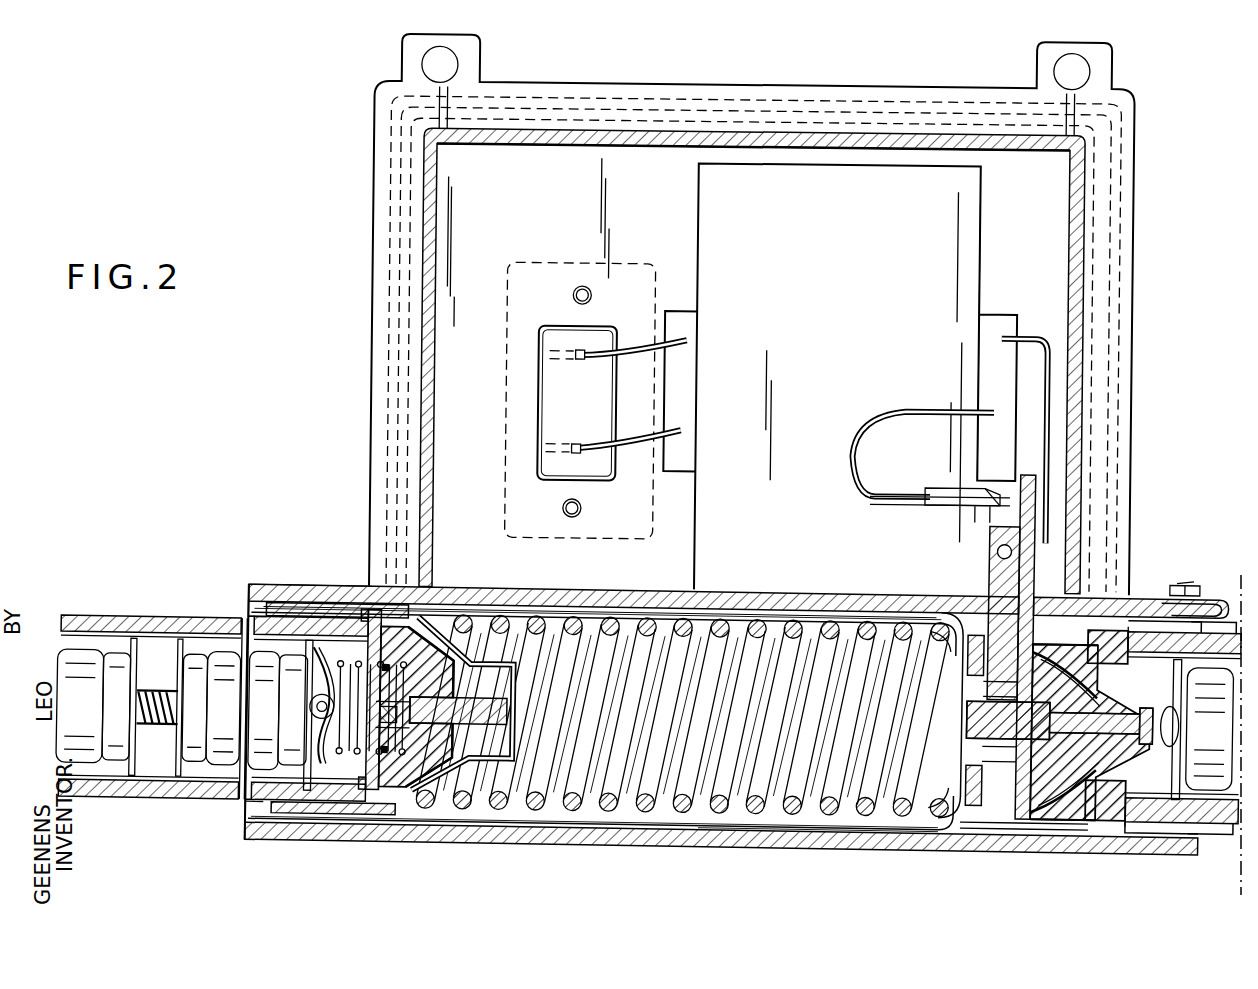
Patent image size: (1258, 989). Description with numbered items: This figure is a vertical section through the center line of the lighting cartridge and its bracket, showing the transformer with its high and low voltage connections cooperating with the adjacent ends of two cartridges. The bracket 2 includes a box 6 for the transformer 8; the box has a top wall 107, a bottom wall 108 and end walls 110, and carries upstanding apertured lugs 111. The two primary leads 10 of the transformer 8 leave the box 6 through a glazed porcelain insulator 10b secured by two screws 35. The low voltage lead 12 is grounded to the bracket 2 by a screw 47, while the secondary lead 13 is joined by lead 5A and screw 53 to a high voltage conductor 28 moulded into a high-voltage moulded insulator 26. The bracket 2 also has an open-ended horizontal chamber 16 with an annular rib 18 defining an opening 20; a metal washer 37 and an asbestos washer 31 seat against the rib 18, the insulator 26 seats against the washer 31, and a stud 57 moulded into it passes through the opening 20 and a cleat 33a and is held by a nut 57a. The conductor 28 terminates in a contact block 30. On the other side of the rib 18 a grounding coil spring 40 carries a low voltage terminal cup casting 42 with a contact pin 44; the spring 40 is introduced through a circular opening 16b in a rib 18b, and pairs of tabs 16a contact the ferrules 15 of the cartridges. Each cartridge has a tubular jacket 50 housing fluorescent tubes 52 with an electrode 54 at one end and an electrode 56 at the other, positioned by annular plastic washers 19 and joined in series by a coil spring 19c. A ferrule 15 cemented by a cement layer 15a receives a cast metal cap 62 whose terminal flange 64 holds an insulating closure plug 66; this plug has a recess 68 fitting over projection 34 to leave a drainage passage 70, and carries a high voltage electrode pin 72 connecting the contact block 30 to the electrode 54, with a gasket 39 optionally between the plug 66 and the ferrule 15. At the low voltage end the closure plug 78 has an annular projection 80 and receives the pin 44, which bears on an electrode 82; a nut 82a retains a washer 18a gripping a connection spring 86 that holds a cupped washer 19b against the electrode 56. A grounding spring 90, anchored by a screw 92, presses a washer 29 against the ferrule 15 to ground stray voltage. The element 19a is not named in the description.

The bracket 2 is at (310, 585).
The box 6 is at (455, 322).
The transformer 8 is at (978, 252).
The primary leads 10 is at (622, 346).
The glazed porcelain insulator 10b is at (533, 424).
The low voltage lead 12 is at (1040, 341).
The secondary lead 13 is at (870, 426).
The ferrule 15 is at (291, 822).
The cement layer 15a is at (278, 826).
The horizontal chamber 16 is at (722, 848).
The tabs 16a is at (326, 846).
The circular opening 16b is at (276, 606).
The annular rib 18 is at (940, 660).
The washer 18a is at (362, 656).
The rib 18b is at (250, 846).
The annular plastic washers 19 is at (133, 700).
The roller 19a is at (1180, 746).
The cupped washer 19b is at (308, 830).
The coil spring 19c is at (130, 742).
The opening 20 is at (940, 662).
The high-voltage moulded insulator 26 is at (962, 832).
The high voltage conductor 28 is at (1040, 502).
The washer 29 is at (1206, 591).
The contact block 30 is at (986, 822).
The asbestos washer 31 is at (975, 822).
The cleat 33a is at (962, 762).
The projection 34 is at (1040, 690).
The screws 35 is at (578, 289).
The metal washer 37 is at (976, 792).
The gasket 39 is at (1106, 818).
The grounding coil spring 40 is at (741, 624).
The low voltage terminal cup casting 42 is at (489, 722).
The contact pin 44 is at (479, 650).
The screw 47 is at (1040, 530).
The tubular jacket 50 is at (206, 620).
The fluorescent tubes 52 is at (222, 766).
The screw 53 is at (968, 490).
The electrode 54 is at (170, 700).
The electrode 56 is at (160, 700).
The stud 57 is at (790, 816).
The nut 57a is at (796, 826).
The cast metal cap 62 is at (373, 822).
The terminal flange 64 is at (1076, 822).
The closure plug 66 is at (1045, 812).
The recess 68 is at (1035, 812).
The drainage passage 70 is at (1010, 817).
The high voltage electrode pin 72 is at (1116, 822).
The closure plug 78 is at (401, 802).
The annular projection 80 is at (456, 782).
The electrode 82 is at (426, 792).
The nut 82a is at (331, 832).
The connection spring 86 is at (326, 660).
The grounding spring 90 is at (1237, 718).
The screw 92 is at (1185, 581).
The top wall 107 is at (660, 136).
The bottom wall 108 is at (705, 592).
The end walls 110 is at (423, 169).
The upstanding apertured lugs 111 is at (410, 40).
The lead 5A is at (920, 503).